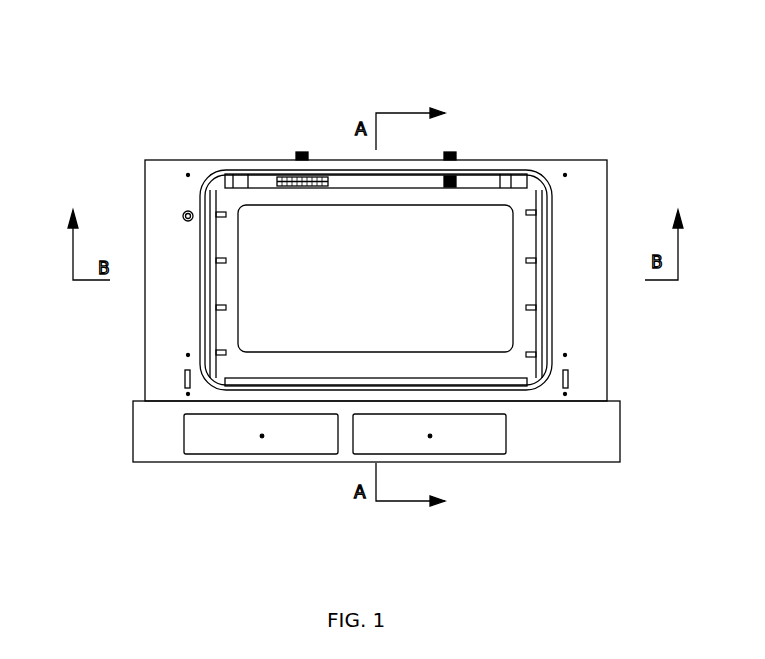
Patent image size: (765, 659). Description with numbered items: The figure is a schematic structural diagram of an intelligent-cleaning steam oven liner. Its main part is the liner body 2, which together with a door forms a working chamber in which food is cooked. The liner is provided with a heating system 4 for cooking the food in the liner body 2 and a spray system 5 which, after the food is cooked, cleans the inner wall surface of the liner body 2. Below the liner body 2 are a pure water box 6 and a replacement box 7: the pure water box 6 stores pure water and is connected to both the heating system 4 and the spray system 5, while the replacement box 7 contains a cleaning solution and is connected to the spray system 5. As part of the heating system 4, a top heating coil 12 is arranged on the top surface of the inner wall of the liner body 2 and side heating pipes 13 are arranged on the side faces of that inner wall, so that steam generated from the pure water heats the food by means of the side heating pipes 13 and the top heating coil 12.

The liner body 2 is at (217, 332).
The heating system 4 is at (206, 345).
The spray system 5 is at (296, 153).
The pure water box 6 is at (248, 433).
The replacement box 7 is at (478, 443).
The top heating coil 12 is at (495, 168).
The side heating pipes 13 is at (213, 207).